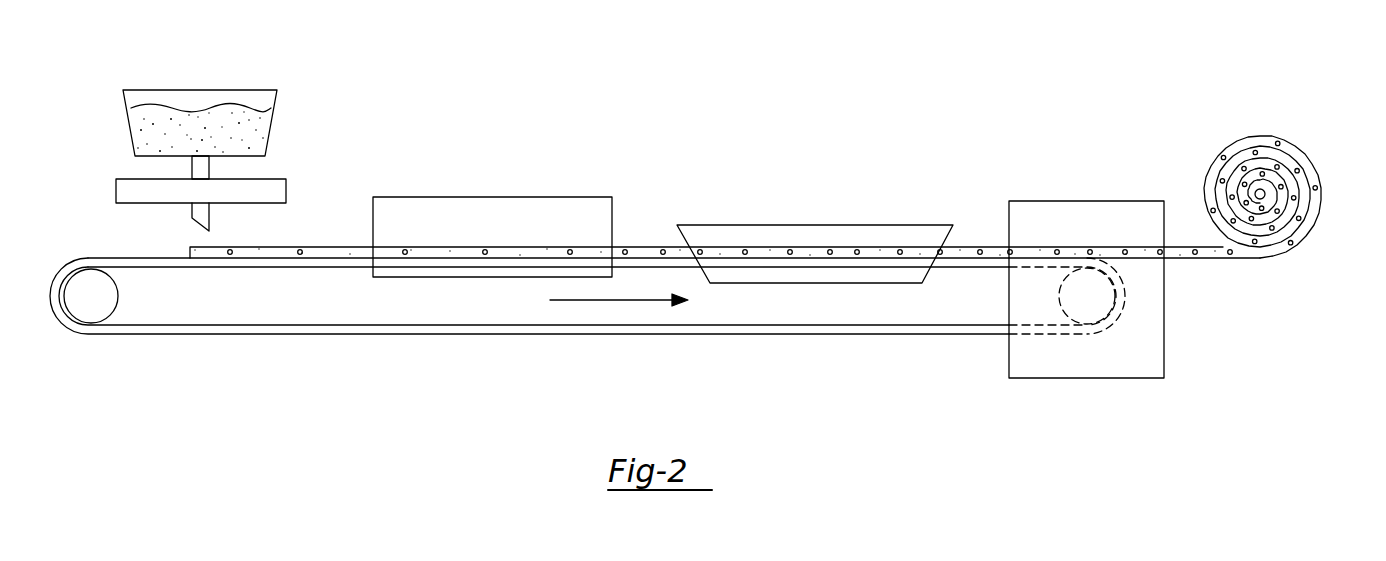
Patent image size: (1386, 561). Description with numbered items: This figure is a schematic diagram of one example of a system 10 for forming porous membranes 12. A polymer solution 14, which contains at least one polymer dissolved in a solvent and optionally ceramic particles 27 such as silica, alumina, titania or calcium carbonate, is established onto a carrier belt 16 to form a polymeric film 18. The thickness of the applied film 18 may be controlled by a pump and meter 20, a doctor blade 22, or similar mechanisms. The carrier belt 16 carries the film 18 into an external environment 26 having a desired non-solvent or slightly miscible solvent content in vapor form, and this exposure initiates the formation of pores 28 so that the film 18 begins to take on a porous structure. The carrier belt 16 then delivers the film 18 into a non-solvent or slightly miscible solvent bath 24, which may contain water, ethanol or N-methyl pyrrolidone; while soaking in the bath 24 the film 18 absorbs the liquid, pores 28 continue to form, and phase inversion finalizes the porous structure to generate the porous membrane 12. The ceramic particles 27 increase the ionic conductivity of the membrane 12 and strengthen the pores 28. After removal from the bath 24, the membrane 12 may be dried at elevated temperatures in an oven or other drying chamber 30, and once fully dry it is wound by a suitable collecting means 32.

The system 10 is at (1102, 93).
The porous membrane 12 is at (1186, 251).
The polymer solution 14 is at (270, 128).
The carrier belt 16 is at (158, 335).
The polymeric film 18 is at (336, 247).
The pump and meter 20 is at (115, 190).
The doctor blade 22 is at (209, 216).
The non-solvent or slightly miscible solvent bath 24 is at (810, 232).
The external environment 26 is at (476, 236).
The ceramic particles 27 is at (210, 125).
The pores 28 is at (485, 254).
The oven or drying chamber 30 is at (1164, 348).
The collecting means 32 is at (1262, 194).